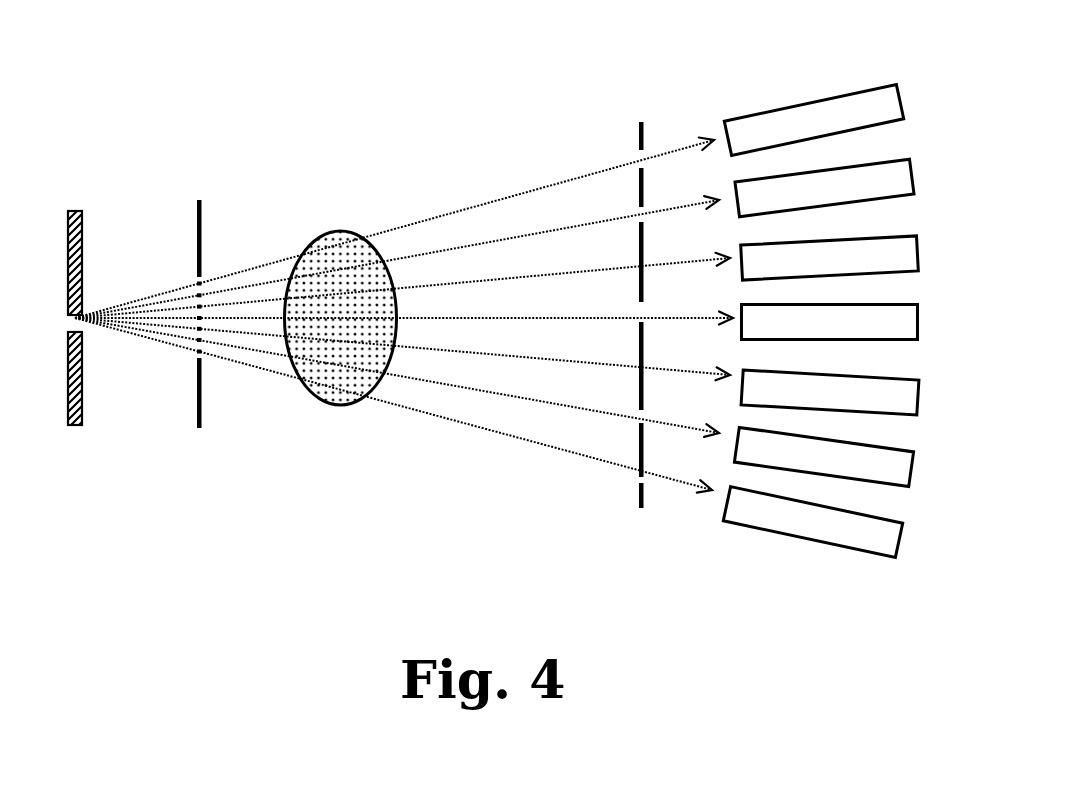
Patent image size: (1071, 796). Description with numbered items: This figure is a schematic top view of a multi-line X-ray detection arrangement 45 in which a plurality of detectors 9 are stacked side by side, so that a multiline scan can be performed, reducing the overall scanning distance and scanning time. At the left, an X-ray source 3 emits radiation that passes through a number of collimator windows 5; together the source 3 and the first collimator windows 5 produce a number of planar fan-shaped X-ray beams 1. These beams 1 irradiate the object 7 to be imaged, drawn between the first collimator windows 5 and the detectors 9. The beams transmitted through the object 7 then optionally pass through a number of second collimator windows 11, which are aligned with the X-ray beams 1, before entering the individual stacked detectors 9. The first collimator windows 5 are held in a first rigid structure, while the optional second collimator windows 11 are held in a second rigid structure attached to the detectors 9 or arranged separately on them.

The detection system 45 is at (329, 77).
The planar fan-shaped X-ray beams 1 is at (500, 200).
The X-ray source 3 is at (82, 417).
The collimator windows 5 is at (200, 413).
The object 7 is at (367, 392).
The detectors 9 is at (763, 117).
The second collimator windows 11 is at (641, 503).